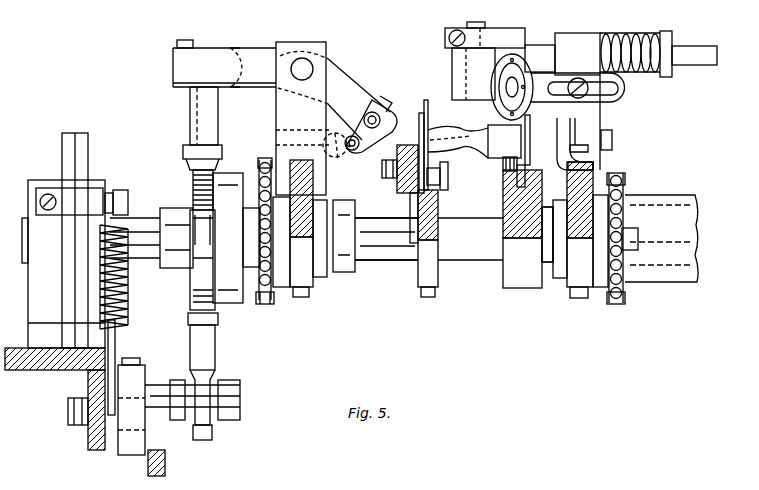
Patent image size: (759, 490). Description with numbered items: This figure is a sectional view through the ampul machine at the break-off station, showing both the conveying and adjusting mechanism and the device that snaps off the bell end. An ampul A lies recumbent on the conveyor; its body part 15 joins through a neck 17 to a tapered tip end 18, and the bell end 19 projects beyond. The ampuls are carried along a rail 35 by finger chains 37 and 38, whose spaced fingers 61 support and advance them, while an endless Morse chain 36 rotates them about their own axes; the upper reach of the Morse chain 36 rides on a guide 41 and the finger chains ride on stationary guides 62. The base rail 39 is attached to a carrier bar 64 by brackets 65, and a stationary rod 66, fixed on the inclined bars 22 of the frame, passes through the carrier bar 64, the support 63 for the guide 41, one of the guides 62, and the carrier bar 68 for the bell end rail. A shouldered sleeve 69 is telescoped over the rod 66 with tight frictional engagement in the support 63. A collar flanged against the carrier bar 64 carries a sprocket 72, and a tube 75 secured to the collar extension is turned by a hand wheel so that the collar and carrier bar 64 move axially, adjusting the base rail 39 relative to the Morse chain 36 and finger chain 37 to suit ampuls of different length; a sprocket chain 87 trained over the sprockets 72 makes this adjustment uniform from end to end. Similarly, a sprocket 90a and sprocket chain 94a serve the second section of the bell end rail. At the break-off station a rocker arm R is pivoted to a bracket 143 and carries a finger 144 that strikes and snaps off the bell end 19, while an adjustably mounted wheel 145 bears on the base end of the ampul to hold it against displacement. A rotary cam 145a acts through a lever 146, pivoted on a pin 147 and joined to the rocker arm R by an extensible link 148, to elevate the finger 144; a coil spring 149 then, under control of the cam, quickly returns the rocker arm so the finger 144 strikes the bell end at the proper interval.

The body part 15 is at (514, 148).
The neck 17 is at (471, 134).
The tapered tip end 18 is at (420, 142).
The bell end 19 is at (336, 158).
The inclined bars 22 is at (32, 362).
The rail 35 is at (410, 196).
The endless chain 36 is at (508, 170).
The finger chain 37 is at (514, 188).
The finger chain 38 is at (446, 174).
The base rail 39 is at (590, 109).
The guide 41 is at (505, 182).
The fingers 61 is at (428, 112).
The stationary guides 62 is at (437, 212).
The support 63 is at (514, 270).
The carrier bar 64 is at (600, 171).
The brackets 65 is at (570, 138).
The stationary rod 66 is at (398, 245).
The carrier bar 68 is at (292, 171).
The shouldered sleeve 69 is at (549, 264).
The sprocket 72 is at (630, 240).
The tube 75 is at (655, 207).
The sprocket chain 87 is at (612, 300).
The sprocket 90a is at (266, 296).
The sprocket chain 94a is at (276, 302).
The bracket 143 is at (322, 50).
The finger 144 is at (366, 160).
The wheel 145 is at (522, 54).
The rotary cam 145a is at (212, 469).
The lever 146 is at (131, 448).
The pin 147 is at (70, 405).
The extensible link 148 is at (196, 118).
The coil spring 149 is at (128, 309).
The rocker arm R is at (262, 48).
The ampul A is at (488, 120).